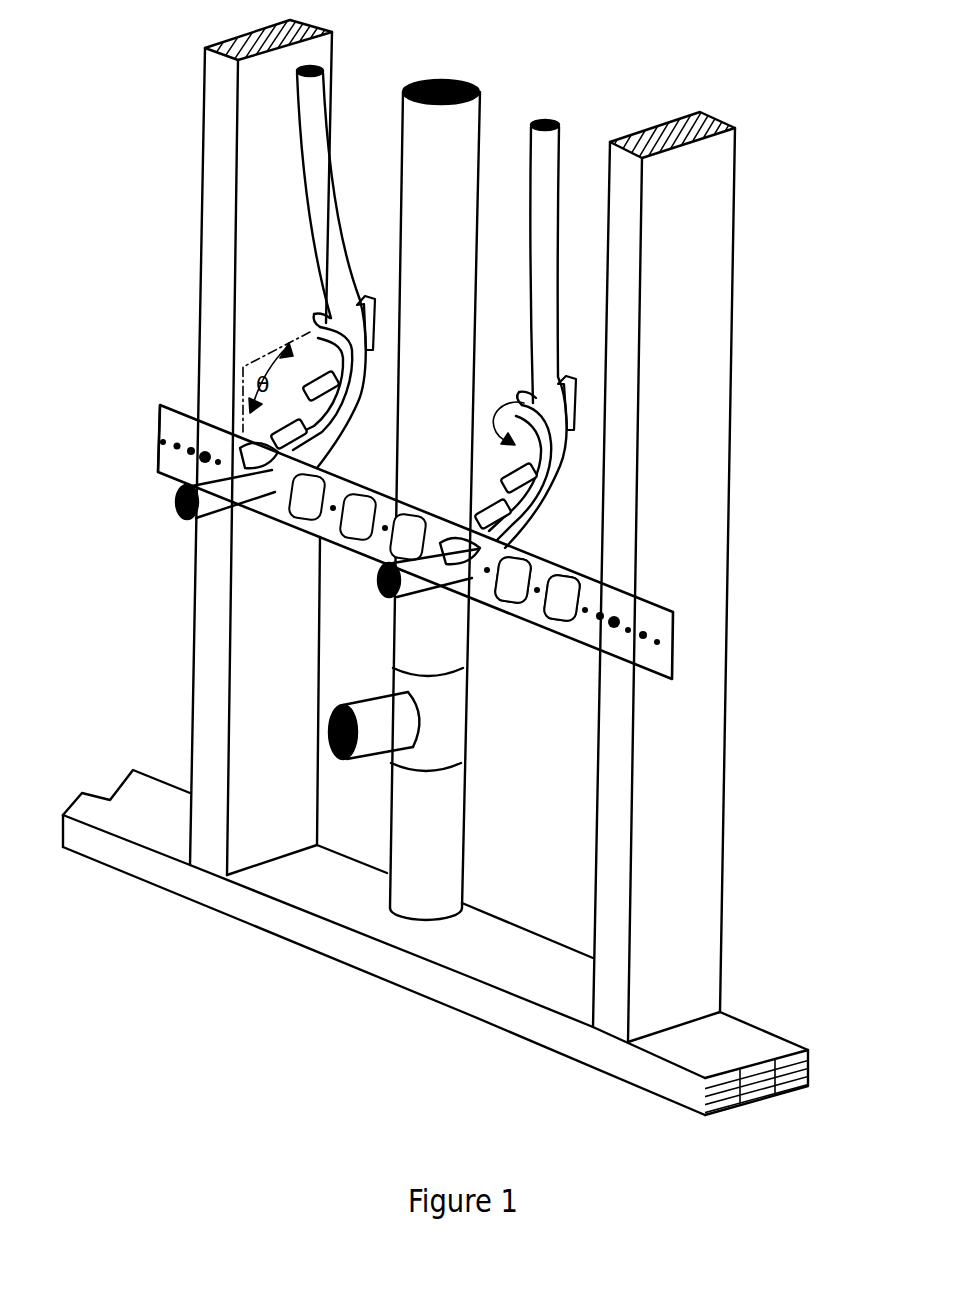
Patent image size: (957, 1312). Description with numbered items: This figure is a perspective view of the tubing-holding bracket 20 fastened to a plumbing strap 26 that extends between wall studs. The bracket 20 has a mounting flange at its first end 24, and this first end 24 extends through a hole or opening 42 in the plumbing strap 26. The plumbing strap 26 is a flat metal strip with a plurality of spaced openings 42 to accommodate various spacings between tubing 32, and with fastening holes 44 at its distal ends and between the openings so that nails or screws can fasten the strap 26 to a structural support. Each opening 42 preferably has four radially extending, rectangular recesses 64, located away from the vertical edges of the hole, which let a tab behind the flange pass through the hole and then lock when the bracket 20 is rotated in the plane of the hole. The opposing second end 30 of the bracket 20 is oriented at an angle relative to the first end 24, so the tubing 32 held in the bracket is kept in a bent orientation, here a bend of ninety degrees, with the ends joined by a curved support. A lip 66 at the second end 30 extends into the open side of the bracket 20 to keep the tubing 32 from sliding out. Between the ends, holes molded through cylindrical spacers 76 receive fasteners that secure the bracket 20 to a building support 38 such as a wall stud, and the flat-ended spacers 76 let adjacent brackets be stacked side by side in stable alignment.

The bracket 20 is at (540, 403).
The first end 24 is at (226, 444).
The plumbing strap 26 is at (652, 616).
The second end 30 is at (372, 288).
The tubing 32 is at (540, 268).
The building support 38 is at (710, 181).
The hole or opening 42 is at (560, 594).
The fastening hole 44 is at (534, 593).
The recess 64 is at (568, 614).
The lip 66 is at (548, 368).
The spacer 76 is at (550, 456).